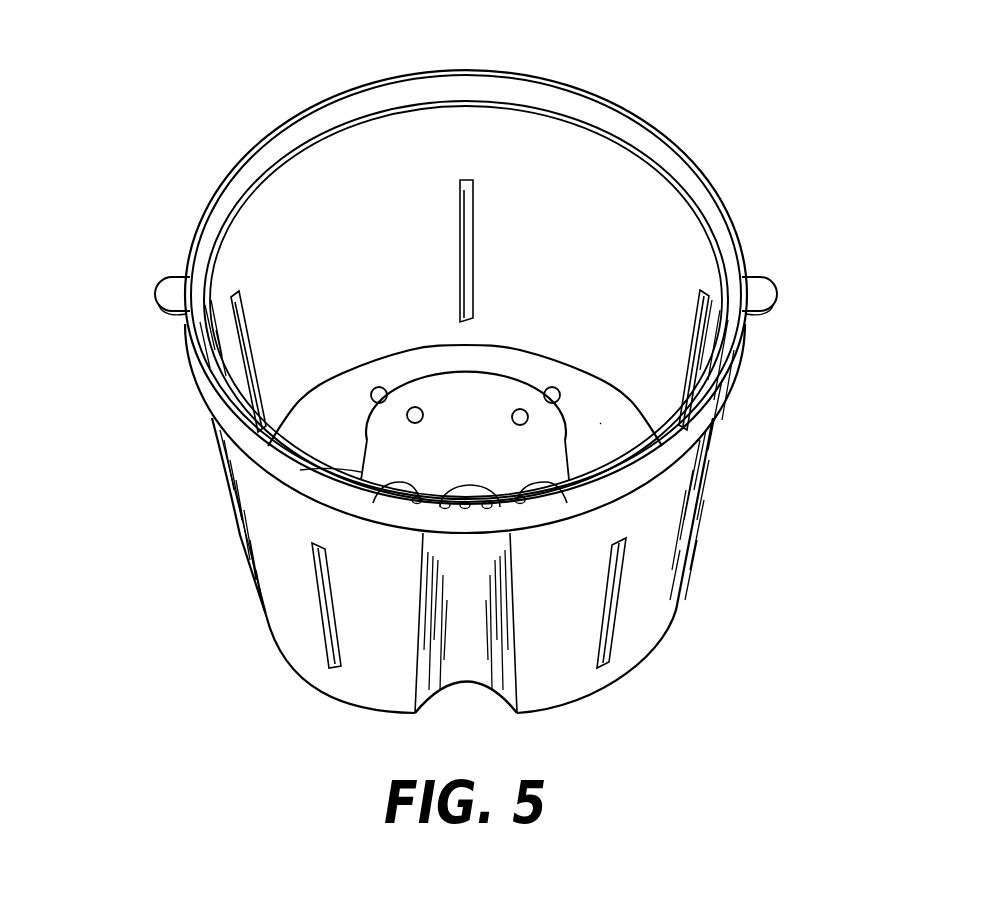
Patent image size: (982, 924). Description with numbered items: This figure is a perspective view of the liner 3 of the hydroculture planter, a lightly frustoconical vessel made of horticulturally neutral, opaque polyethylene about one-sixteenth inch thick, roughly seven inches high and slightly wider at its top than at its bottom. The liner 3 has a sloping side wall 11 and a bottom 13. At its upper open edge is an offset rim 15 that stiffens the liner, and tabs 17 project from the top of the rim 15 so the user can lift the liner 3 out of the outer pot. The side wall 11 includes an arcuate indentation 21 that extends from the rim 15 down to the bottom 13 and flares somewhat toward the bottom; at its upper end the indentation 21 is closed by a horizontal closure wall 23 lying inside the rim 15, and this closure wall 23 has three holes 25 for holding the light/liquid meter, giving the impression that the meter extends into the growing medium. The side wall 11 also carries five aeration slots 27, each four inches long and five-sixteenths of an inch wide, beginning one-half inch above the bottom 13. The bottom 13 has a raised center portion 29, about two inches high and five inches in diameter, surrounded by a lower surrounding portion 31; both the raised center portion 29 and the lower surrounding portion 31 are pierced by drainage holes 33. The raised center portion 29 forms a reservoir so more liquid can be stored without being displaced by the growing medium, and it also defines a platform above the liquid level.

The liner 3 is at (728, 171).
The side wall 11 is at (717, 428).
The bottom 13 is at (600, 423).
The offset rim 15 is at (443, 103).
The tabs 17 is at (156, 291).
The arcuate indentation 21 is at (467, 645).
The horizontal closure wall 23 is at (643, 453).
The holes 25 is at (400, 505).
The aeration slots 27 is at (468, 246).
The raised center portion 29 is at (403, 447).
The lower surrounding portion 31 is at (330, 462).
The drainage holes 33 is at (416, 408).